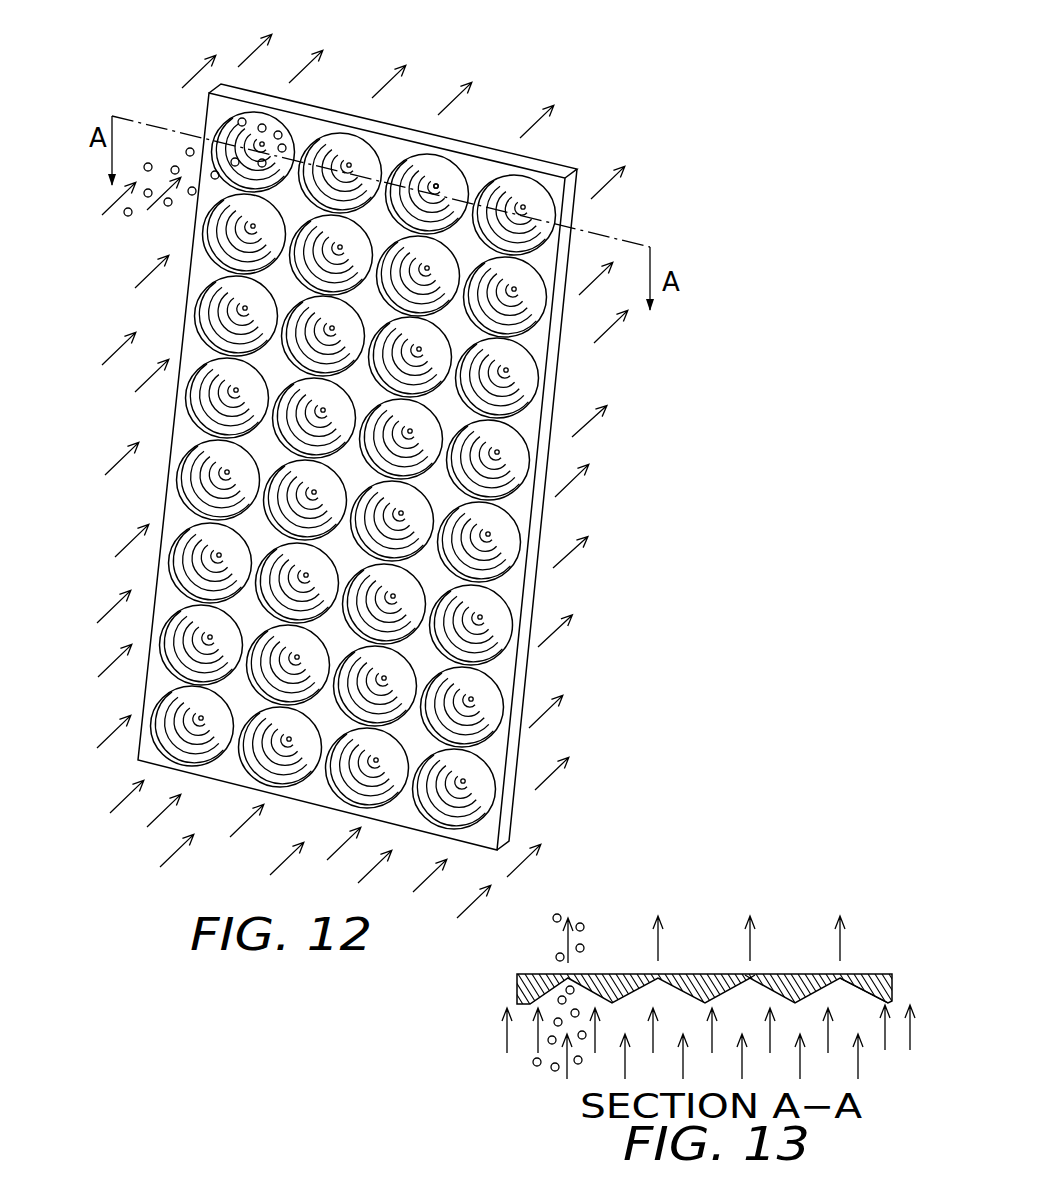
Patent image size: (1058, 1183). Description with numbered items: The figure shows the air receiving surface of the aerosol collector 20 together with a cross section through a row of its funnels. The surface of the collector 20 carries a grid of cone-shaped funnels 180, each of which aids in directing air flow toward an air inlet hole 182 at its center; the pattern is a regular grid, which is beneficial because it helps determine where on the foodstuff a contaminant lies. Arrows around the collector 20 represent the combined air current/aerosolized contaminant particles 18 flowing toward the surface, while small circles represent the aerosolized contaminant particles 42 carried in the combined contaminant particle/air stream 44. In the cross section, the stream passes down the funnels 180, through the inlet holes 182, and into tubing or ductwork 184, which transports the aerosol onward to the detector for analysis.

In FIG. 12, the combined air current/aerosolized contaminant particles 18 is at (595, 342).
In FIG. 12, the aerosol collector 20 is at (400, 436).
In FIG. 13, the aerosol collector 20 is at (705, 903).
In FIG. 12, the aerosolized contaminant particles 42 is at (150, 165).
In FIG. 13, the aerosolized contaminant particles 42 is at (554, 1071).
In FIG. 12, the combined contaminant particle/air stream 44 is at (152, 221).
In FIG. 13, the combined contaminant particle/air stream 44 is at (527, 1066).
In FIG. 12, the cone-shaped funnels 180 is at (532, 183).
In FIG. 13, the cone-shaped funnels 180 is at (858, 985).
In FIG. 12, the air inlet holes 182 is at (437, 186).
In FIG. 13, the air inlet holes 182 is at (750, 975).
In FIG. 13, the tubing or ductwork 184 is at (577, 905).